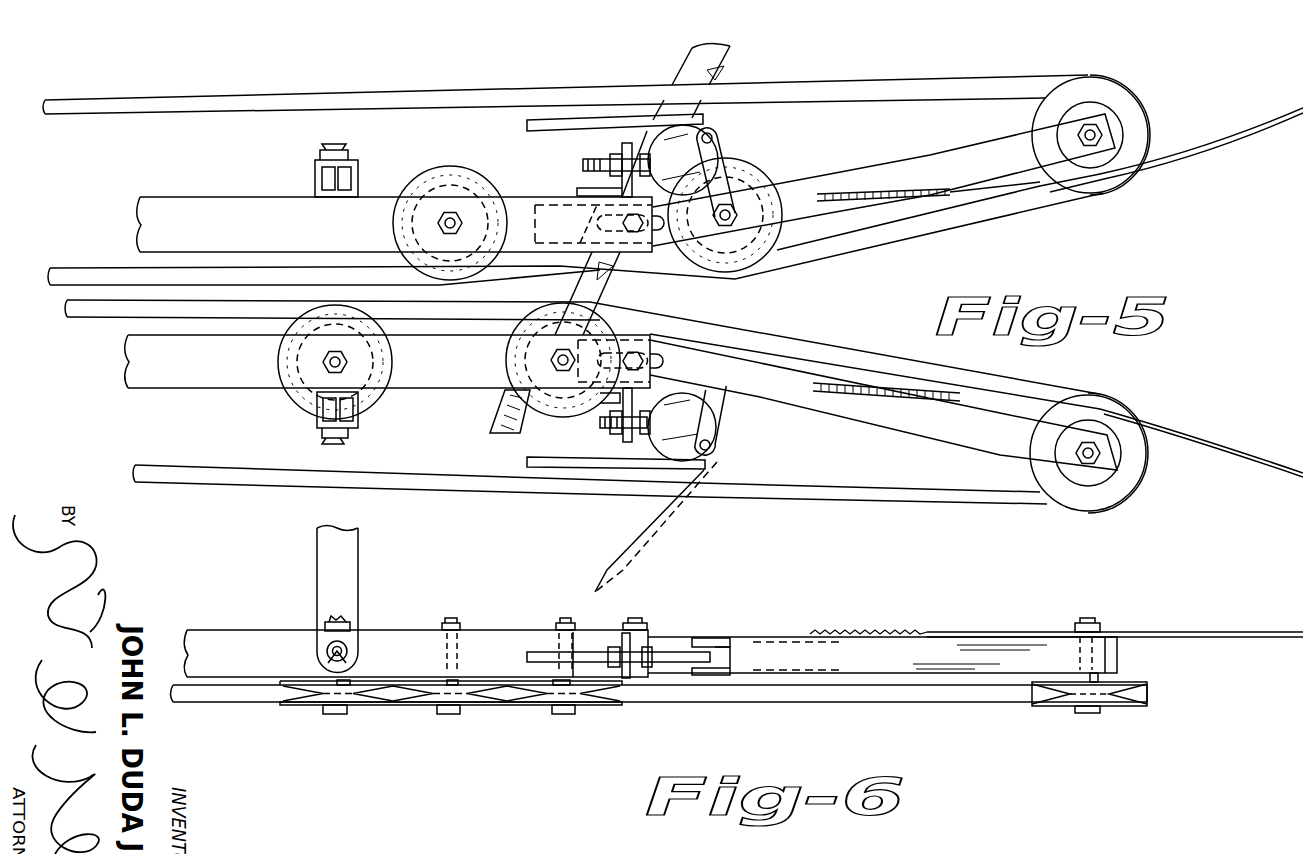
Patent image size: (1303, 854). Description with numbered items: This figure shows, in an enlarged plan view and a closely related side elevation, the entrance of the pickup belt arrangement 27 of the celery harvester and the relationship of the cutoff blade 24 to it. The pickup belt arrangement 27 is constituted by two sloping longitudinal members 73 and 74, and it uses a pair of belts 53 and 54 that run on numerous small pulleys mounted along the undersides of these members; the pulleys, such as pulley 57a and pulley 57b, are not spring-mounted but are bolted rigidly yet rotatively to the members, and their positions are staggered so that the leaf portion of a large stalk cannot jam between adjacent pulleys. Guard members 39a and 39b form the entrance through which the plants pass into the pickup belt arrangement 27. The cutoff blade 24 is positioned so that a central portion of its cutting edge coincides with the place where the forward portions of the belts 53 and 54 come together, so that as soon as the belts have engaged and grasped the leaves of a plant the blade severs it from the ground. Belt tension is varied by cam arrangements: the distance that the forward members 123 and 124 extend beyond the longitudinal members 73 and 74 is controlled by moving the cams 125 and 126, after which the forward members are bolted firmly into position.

The belt 53 is at (464, 90).
The cutoff blade 24 is at (738, 53).
The cam 125 is at (700, 126).
The forward member 123 is at (910, 170).
The pulley 57a is at (1124, 100).
The guard member 39a is at (1244, 133).
The sloping longitudinal member 73 is at (275, 182).
The pickup belt arrangement 27 is at (200, 266).
The sloping longitudinal member 74 is at (444, 380).
The cam 126 is at (697, 398).
The forward member 124 is at (921, 422).
The pulley 57b is at (1113, 490).
The belt 54 is at (858, 503).
The guard member 39b is at (1233, 441).